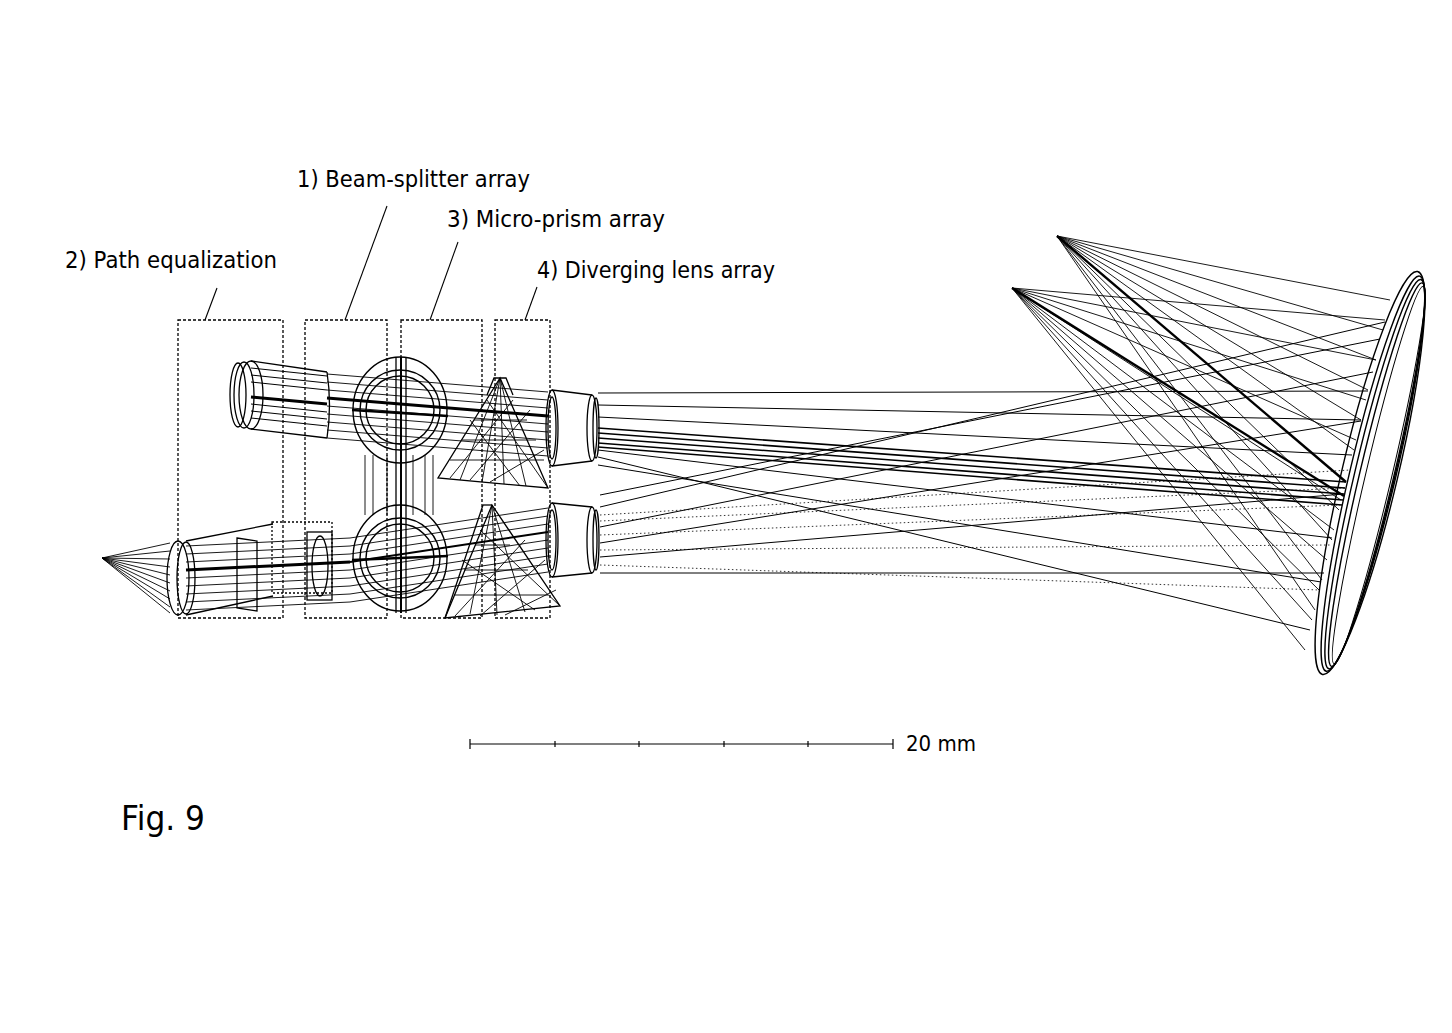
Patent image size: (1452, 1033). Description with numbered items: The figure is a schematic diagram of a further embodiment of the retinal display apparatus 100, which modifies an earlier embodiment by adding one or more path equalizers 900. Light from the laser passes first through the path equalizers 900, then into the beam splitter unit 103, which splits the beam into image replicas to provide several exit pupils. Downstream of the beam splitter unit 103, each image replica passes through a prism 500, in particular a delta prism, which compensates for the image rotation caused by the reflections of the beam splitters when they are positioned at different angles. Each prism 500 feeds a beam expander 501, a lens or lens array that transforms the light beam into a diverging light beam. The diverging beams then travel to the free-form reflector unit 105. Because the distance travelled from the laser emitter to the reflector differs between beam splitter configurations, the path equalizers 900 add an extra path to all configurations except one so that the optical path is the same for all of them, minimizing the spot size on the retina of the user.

The retinal display apparatus 100 is at (172, 124).
The path equalizer 900 is at (232, 620).
The beam splitter unit 103 is at (353, 620).
The prism 500 is at (443, 620).
The beam expander 501 is at (530, 620).
The free-form reflector unit 105 is at (1408, 282).